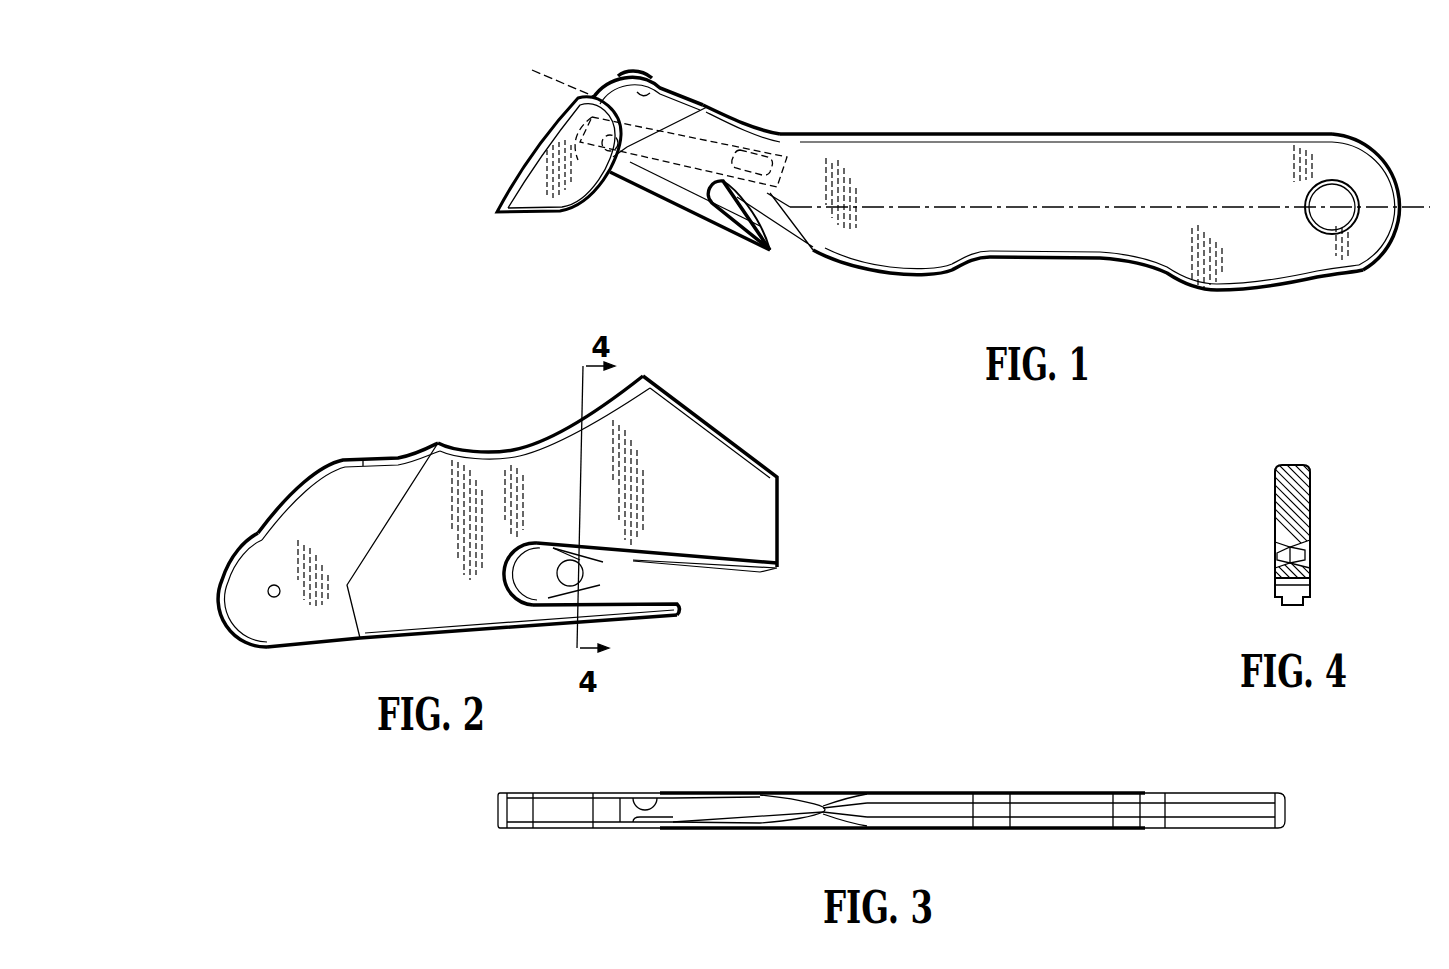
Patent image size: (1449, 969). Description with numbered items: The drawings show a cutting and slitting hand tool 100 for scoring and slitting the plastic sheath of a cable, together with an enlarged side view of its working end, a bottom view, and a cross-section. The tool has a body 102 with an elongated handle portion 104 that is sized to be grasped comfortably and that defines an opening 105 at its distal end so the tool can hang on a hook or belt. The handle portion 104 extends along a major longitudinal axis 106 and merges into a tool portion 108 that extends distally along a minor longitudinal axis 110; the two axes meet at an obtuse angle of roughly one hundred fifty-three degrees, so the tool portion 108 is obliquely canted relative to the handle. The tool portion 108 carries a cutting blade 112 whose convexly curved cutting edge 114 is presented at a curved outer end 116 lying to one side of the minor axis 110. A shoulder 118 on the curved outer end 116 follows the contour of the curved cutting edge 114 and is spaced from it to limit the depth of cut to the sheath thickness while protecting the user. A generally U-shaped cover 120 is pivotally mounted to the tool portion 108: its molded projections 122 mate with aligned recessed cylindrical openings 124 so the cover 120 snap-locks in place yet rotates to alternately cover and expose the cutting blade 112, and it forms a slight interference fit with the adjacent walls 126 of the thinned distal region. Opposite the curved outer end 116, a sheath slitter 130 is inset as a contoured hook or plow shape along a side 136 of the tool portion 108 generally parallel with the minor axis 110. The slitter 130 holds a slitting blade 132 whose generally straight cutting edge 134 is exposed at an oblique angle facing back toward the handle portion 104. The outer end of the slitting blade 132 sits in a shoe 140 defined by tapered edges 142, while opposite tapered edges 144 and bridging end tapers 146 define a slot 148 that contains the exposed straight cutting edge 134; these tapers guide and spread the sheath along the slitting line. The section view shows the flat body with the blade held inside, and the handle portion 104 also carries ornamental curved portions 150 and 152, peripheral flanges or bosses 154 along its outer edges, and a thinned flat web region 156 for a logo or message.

In FIG. 1, the cutting and slitting hand tool 100 is at (825, 105).
In FIG. 1, the body 102 is at (1084, 283).
In FIG. 2, the body 102 is at (737, 460).
In FIG. 1, the handle portion 104 is at (1040, 165).
In FIG. 3, the handle portion 104 is at (1065, 792).
In FIG. 1, the opening 105 is at (1330, 181).
In FIG. 1, the major longitudinal axis 106 is at (1237, 207).
In FIG. 1, the tool portion 108 is at (717, 104).
In FIG. 2, the tool portion 108 is at (481, 484).
In FIG. 3, the tool portion 108 is at (710, 793).
In FIG. 4, the tool portion 108 is at (1275, 492).
In FIG. 1, the minor longitudinal axis 110 is at (532, 70).
In FIG. 1, the cutting blade 112 is at (707, 137).
In FIG. 1, the curved cutting edge 114 is at (618, 78).
In FIG. 1, the curved outer end 116 is at (586, 82).
In FIG. 1, the shoulder 118 is at (648, 90).
In FIG. 2, the shoulder 118 is at (287, 496).
In FIG. 1, the cover 120 is at (533, 200).
In FIG. 3, the cover 120 is at (540, 793).
In FIG. 3, the projections 122 is at (653, 797).
In FIG. 2, the recessed cylindrical openings 124 is at (274, 598).
In FIG. 2, the adjacent walls 126 is at (233, 582).
In FIG. 3, the adjacent walls 126 is at (653, 827).
In FIG. 1, the sheath slitter 130 is at (713, 250).
In FIG. 2, the sheath slitter 130 is at (647, 620).
In FIG. 3, the sheath slitter 130 is at (838, 835).
In FIG. 1, the slitting blade 132 is at (657, 183).
In FIG. 4, the slitting blade 132 is at (1300, 562).
In FIG. 1, the straight cutting edge 134 is at (797, 253).
In FIG. 4, the straight cutting edge 134 is at (1307, 545).
In FIG. 1, the side 136 is at (677, 217).
In FIG. 2, the side 136 is at (700, 618).
In FIG. 4, the side 136 is at (1283, 553).
In FIG. 1, the shoe 140 is at (757, 250).
In FIG. 3, the shoe 140 is at (790, 805).
In FIG. 2, the tapered edges 142 is at (610, 600).
In FIG. 3, the tapered edges 142 is at (793, 823).
In FIG. 2, the opposite tapered edges 144 is at (693, 563).
In FIG. 2, the bridging end tapers 146 is at (553, 578).
In FIG. 3, the bridging end tapers 146 is at (843, 800).
In FIG. 2, the slot 148 is at (612, 578).
In FIG. 1, the curved portion 150 is at (1232, 292).
In FIG. 1, the curved portion 152 is at (928, 274).
In FIG. 1, the peripheral flanges or bosses 154 is at (962, 133).
In FIG. 1, the region 156 is at (1111, 173).